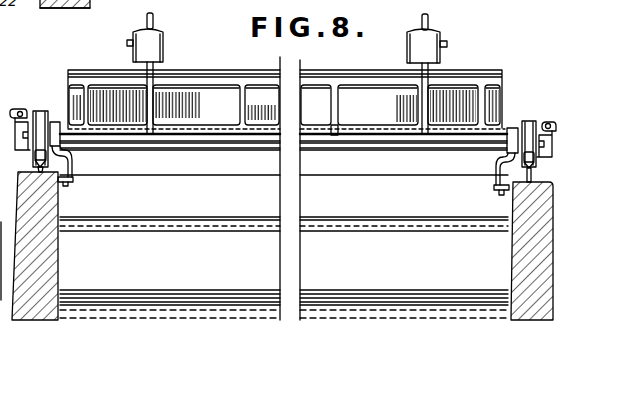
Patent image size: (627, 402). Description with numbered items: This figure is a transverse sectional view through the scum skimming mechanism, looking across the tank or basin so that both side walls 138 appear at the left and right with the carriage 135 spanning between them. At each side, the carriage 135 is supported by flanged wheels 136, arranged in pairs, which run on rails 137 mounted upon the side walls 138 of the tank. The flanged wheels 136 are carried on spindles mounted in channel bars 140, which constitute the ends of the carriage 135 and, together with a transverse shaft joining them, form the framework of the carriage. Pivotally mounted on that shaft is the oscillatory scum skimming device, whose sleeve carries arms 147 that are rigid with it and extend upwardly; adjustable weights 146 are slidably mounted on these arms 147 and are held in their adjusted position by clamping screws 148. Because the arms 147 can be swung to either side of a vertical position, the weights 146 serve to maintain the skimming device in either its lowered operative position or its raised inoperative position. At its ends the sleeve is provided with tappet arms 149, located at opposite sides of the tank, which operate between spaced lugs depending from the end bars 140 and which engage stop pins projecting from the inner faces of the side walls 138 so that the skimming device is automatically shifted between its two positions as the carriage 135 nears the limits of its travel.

The carriage 135 is at (509, 127).
The flanged wheels 136 is at (531, 121).
The rails 137 is at (529, 173).
The side walls 138 is at (544, 245).
The channel bars 140 is at (50, 121).
The adjustable weights 146 is at (435, 37).
The arms 147 is at (434, 73).
The clamping screws 148 is at (449, 45).
The tappet arms 149 is at (499, 159).